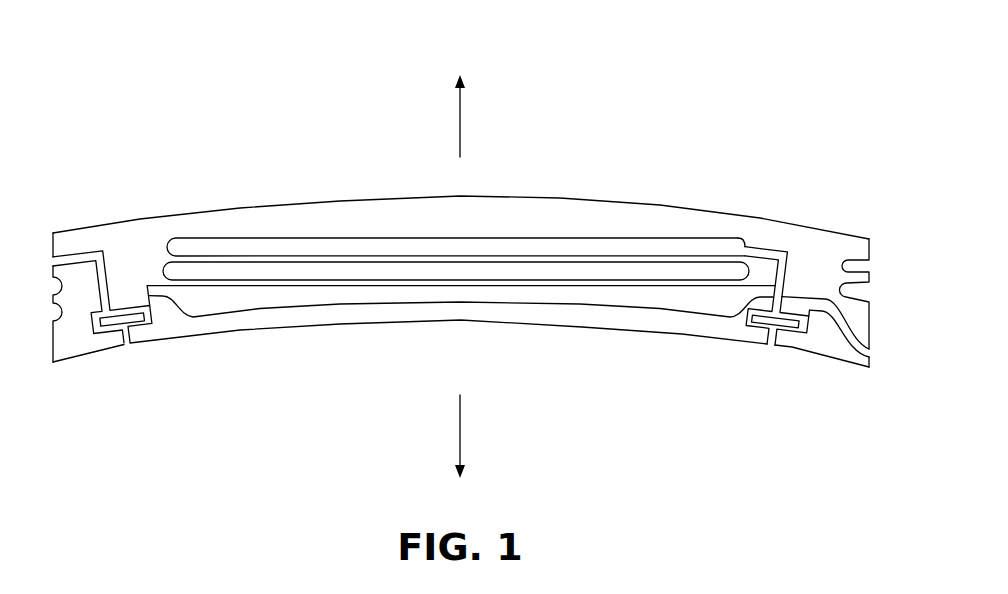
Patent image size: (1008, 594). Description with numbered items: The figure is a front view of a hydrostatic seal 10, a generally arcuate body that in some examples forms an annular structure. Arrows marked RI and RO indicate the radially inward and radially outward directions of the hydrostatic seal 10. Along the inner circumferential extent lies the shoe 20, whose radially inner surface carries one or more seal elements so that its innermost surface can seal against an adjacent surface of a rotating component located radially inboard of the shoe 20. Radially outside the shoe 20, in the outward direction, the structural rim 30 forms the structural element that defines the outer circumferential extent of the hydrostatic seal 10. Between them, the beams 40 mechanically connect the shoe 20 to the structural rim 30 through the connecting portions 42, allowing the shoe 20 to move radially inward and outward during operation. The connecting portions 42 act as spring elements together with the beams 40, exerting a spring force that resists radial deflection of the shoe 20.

The hydrostatic seal 10 is at (187, 108).
The shoe 20 is at (505, 321).
The structural rim 30 is at (587, 215).
The beams 40 is at (431, 278).
The connecting portions 42 is at (168, 272).